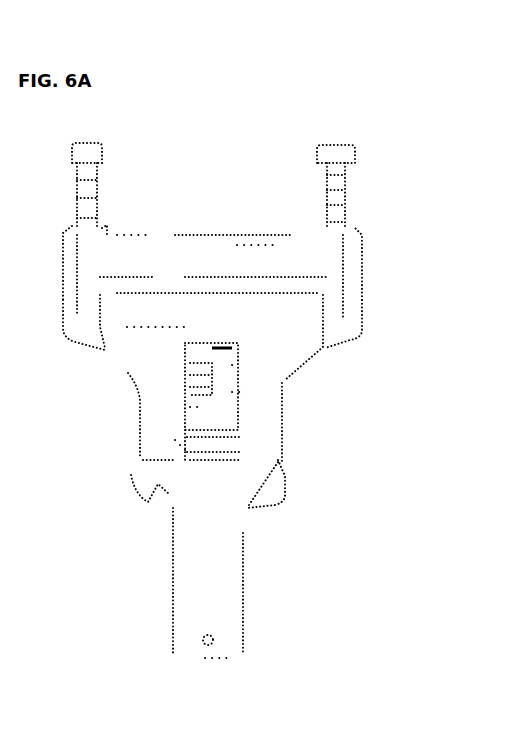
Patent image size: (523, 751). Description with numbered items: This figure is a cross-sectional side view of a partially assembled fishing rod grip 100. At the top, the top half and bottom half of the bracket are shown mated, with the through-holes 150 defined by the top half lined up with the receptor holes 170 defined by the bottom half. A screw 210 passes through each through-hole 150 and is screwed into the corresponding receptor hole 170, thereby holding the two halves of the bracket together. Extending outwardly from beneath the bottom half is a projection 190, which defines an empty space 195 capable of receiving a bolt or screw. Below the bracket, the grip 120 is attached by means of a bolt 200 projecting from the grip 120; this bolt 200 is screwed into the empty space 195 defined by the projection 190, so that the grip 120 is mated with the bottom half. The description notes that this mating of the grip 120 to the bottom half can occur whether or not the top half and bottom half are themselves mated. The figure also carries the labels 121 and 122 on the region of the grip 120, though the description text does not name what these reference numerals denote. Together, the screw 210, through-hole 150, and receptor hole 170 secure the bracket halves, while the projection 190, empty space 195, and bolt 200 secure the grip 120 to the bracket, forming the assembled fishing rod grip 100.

The fishing rod grip 100 is at (245, 91).
The screw 210 is at (332, 173).
The through-hole 150 is at (315, 265).
The receptor hole 170 is at (90, 312).
The projection 190 is at (142, 415).
The empty space 195 is at (216, 348).
The bolt 200 is at (213, 413).
The shoulder 121 is at (141, 460).
The grip 120 is at (188, 558).
The stem opening 122 is at (231, 661).